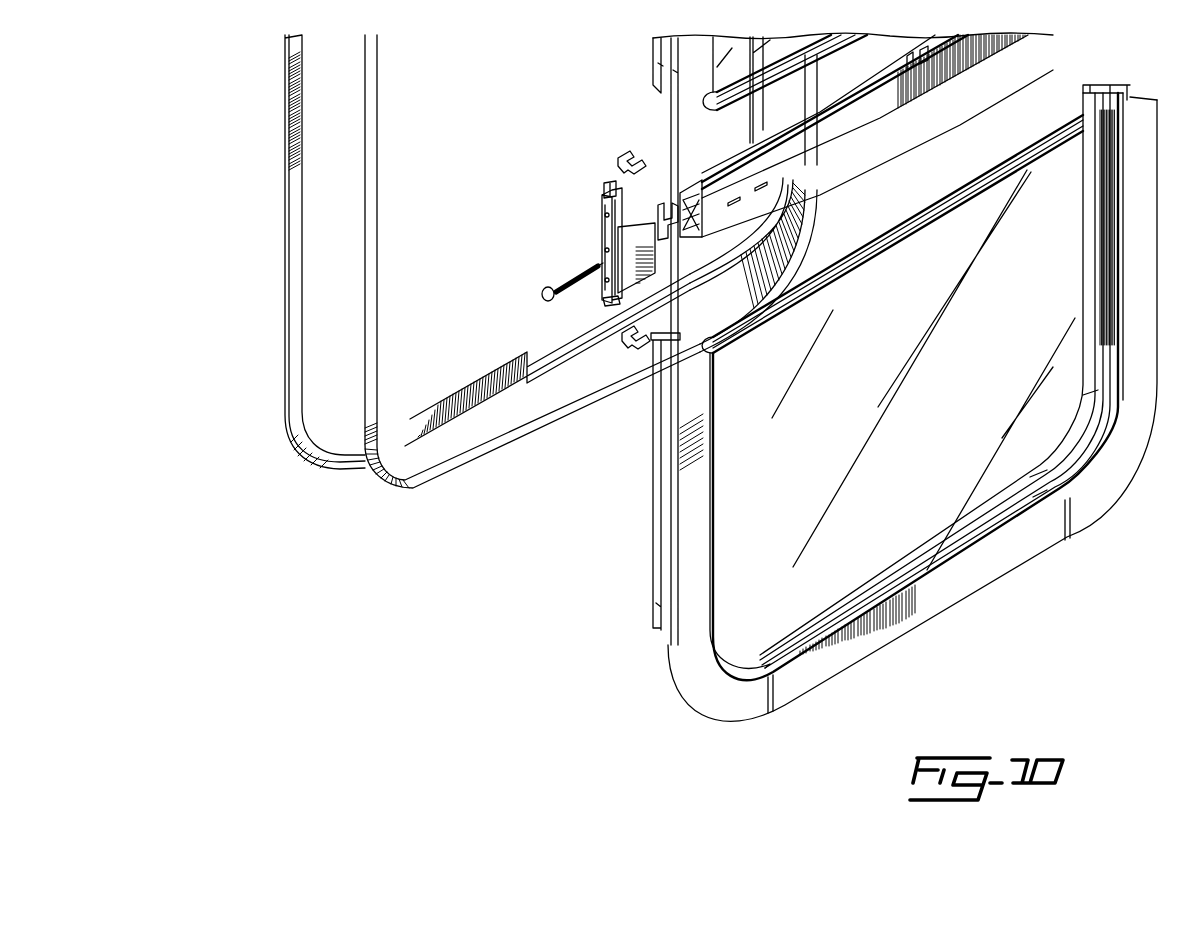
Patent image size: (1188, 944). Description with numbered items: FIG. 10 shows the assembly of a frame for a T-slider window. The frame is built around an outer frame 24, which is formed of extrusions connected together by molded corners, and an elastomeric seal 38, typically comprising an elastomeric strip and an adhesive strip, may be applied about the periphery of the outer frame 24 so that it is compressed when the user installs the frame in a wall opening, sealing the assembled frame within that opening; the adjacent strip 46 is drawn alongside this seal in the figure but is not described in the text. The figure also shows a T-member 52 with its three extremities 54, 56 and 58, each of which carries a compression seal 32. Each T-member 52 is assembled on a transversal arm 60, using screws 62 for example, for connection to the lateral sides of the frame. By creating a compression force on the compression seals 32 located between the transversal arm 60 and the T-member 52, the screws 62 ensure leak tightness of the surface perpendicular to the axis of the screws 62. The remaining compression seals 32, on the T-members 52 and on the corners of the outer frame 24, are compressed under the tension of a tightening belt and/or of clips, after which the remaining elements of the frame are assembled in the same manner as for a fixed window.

The outer frame 24 is at (648, 547).
The compression seal 32 is at (628, 152).
The elastomeric seal 38 is at (295, 232).
The inner seal channel 46 is at (372, 163).
The T-member 52 is at (600, 200).
The extremity of T-member 54 is at (612, 302).
The extremity of T-member 56 is at (630, 215).
The extremity of T-member 58 is at (606, 185).
The transversal arm 60 is at (872, 130).
The screw 62 is at (548, 290).